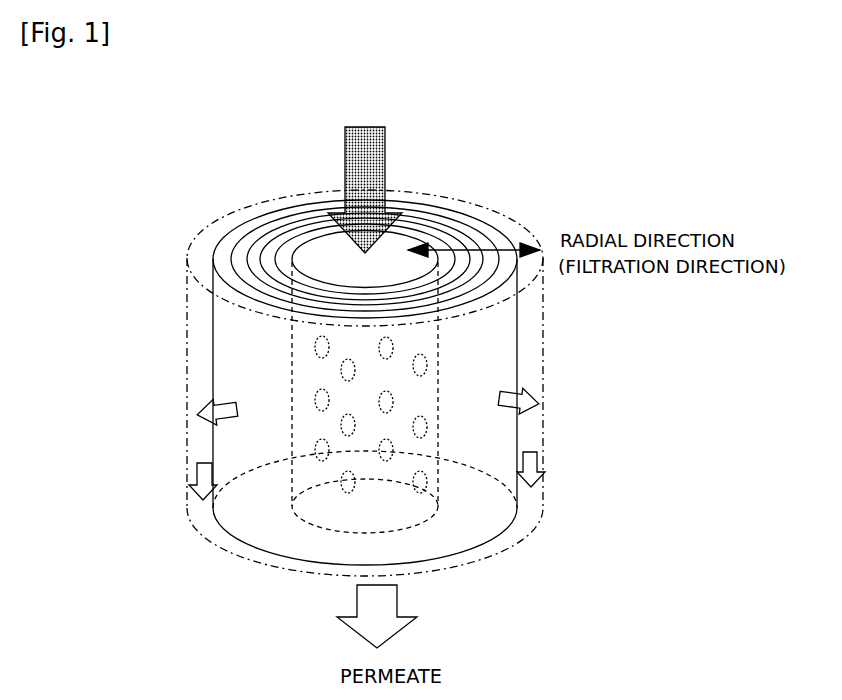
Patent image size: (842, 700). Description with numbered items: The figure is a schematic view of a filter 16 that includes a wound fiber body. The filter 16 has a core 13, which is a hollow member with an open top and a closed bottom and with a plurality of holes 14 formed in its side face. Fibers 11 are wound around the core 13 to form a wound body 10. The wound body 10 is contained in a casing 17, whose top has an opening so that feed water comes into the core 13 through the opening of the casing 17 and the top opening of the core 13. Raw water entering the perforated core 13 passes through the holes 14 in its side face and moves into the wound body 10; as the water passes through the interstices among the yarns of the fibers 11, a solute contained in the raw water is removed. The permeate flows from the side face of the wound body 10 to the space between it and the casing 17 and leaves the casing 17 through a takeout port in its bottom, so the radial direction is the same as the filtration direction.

The wound body 10 is at (461, 204).
The fibers 11 is at (480, 252).
The core 13 is at (520, 325).
The holes 14 is at (393, 400).
The filter 16 is at (468, 104).
The casing 17 is at (462, 572).